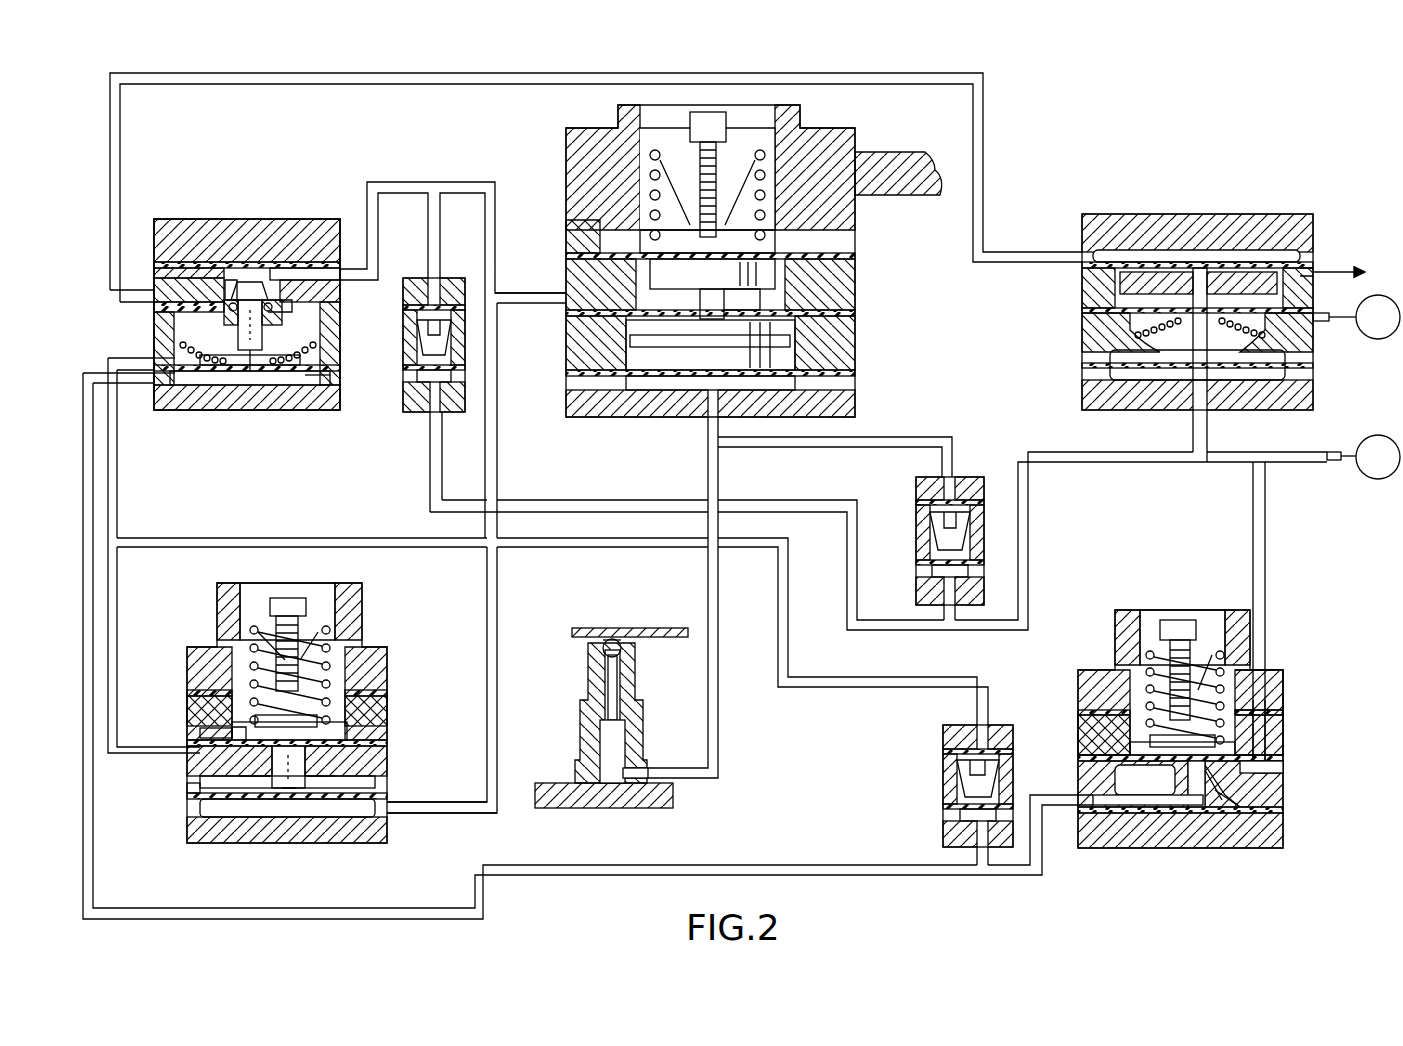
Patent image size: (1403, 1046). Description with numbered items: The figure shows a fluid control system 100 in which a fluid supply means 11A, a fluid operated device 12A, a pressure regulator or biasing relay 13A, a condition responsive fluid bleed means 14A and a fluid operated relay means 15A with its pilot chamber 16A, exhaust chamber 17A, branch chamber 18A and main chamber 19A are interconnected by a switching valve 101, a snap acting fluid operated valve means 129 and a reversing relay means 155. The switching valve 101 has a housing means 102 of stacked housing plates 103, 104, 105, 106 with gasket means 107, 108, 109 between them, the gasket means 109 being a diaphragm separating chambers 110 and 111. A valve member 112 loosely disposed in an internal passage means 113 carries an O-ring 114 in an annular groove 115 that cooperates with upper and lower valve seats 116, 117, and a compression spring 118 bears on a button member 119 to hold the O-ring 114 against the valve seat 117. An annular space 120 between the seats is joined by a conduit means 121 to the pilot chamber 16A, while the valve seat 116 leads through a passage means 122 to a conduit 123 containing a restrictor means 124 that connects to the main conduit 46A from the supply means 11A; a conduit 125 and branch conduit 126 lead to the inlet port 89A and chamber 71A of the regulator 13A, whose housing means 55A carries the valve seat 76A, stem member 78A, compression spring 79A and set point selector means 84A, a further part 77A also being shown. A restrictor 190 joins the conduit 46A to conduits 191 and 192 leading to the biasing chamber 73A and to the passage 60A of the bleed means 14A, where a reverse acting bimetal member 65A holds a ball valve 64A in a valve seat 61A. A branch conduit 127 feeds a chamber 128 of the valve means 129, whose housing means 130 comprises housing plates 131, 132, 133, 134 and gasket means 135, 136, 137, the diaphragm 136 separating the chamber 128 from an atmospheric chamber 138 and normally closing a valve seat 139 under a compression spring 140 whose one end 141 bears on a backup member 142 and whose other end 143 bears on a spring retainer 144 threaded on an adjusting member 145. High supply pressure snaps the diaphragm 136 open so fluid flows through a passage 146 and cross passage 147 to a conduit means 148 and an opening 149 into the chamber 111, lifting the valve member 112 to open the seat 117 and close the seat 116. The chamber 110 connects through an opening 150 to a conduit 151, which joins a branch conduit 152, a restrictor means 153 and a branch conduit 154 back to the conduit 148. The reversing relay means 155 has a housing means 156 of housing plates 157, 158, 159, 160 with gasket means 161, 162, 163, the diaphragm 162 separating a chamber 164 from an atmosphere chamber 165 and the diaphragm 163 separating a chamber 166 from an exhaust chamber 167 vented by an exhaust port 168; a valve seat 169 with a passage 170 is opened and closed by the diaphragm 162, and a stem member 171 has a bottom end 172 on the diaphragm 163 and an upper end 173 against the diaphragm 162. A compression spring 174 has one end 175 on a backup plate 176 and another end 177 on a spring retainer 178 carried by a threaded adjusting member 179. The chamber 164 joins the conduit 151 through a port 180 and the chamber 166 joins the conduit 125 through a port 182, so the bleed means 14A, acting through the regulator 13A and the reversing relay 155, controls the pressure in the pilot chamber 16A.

The fluid control system 100 is at (1258, 120).
The switching valve 101 is at (228, 306).
The housing means 102 is at (156, 217).
The housing plate 103 is at (160, 240).
The housing plate 104 is at (165, 292).
The housing plate 105 is at (160, 340).
The housing plate 106 is at (195, 400).
The gasket means 107 is at (165, 272).
The gasket means 108 is at (170, 316).
The gasket means 109 is at (242, 385).
The chamber 110 is at (312, 378).
The chamber 111 is at (300, 385).
The valve member 112 is at (282, 332).
The internal passage means 113 is at (226, 290).
The O-ring 114 is at (230, 305).
The annular groove 115 is at (268, 303).
The upper valve seat 116 is at (285, 300).
The lower valve seat 117 is at (262, 322).
The compression spring 118 is at (318, 368).
The button member 119 is at (258, 372).
The annular space 120 is at (330, 296).
The conduit means 121 is at (237, 86).
The passage means 122 is at (240, 282).
The conduit 123 is at (428, 216).
The restrictor means 124 is at (445, 320).
The conduit 125 is at (496, 216).
The branch conduit 126 is at (556, 293).
The branch conduit 127 is at (1253, 510).
The chamber 128 is at (1260, 782).
The snap acting fluid operated valve means 129 is at (1200, 721).
The housing means 130 is at (1235, 608).
The housing plate 131 is at (1082, 675).
The housing plate 132 is at (1095, 735).
The housing plate 133 is at (1095, 782).
The housing plate 134 is at (1125, 850).
The gasket means 135 is at (1098, 715).
The gasket means 136 is at (1095, 758).
The gasket means 137 is at (1285, 830).
The atmospheric chamber 138 is at (1260, 722).
The valve seat 139 is at (1215, 800).
The compression spring 140 is at (1255, 690).
The end 141 is at (1230, 745).
The backup member 142 is at (1235, 750).
The other end 143 is at (1150, 650).
The spring retainer 144 is at (1220, 660).
The threaded adjusting member 145 is at (1165, 640).
The passage 146 is at (1208, 805).
The cross passage 147 is at (1165, 810).
The conduit means 148 is at (1025, 876).
The opening 149 is at (165, 385).
The opening 150 is at (152, 370).
The conduit 151 is at (117, 502).
The branch conduit 152 is at (345, 538).
The restrictor means 153 is at (945, 780).
The branch conduit 154 is at (975, 852).
The reversing relay means 155 is at (297, 723).
The housing means 156 is at (240, 583).
The housing plate 157 is at (190, 660).
The housing plate 158 is at (200, 710).
The housing plate 159 is at (370, 765).
The housing plate 160 is at (190, 828).
The gasket means 161 is at (205, 690).
The gasket means 162 is at (205, 735).
The gasket means 163 is at (200, 800).
The chamber 164 is at (370, 744).
The atmosphere chamber 165 is at (330, 655).
The chamber 166 is at (210, 815).
The exhaust chamber 167 is at (370, 786).
The exhaust port 168 is at (178, 781).
The valve seat 169 is at (315, 790).
The passage 170 is at (255, 776).
The stem member 171 is at (272, 800).
The bottom end 172 is at (290, 790).
The upper end 173 is at (330, 735).
The compression spring 174 is at (350, 672).
The end 175 is at (248, 727).
The backup plate 176 is at (300, 720).
The other end 177 is at (250, 636).
The spring retainer 178 is at (258, 632).
The threaded adjusting member 179 is at (306, 622).
The port 180 is at (187, 770).
The port 182 is at (442, 825).
The restrictor 190 is at (918, 535).
The conduit 191 is at (897, 437).
The conduit 192 is at (708, 462).
The fluid supply means 11A is at (1373, 478).
The fluid operated device 12A is at (1392, 338).
The pressure regulator 13A is at (725, 270).
The condition responsive fluid bleed means 14A is at (606, 686).
The fluid operated relay means 15A is at (1203, 328).
The pilot chamber 16A is at (1275, 248).
The exhaust chamber 17A is at (1130, 300).
The branch chamber 18A is at (1135, 330).
The main chamber 19A is at (1115, 378).
The main conduit 46A is at (1030, 510).
The housing means 55A is at (860, 242).
The passage means 60A is at (592, 738).
The frustoconical valve seat 61A is at (620, 655).
The ball valve 64A is at (608, 640).
The bimetal member 65A is at (640, 627).
The chamber 71A is at (760, 302).
The biasing chamber 73A is at (675, 390).
The valve seat 76A is at (650, 280).
The piston 77A is at (640, 345).
The stem member 78A is at (724, 300).
The compression spring 79A is at (650, 188).
The cam operated set point selector means 84A is at (605, 135).
The inlet port 89A is at (585, 268).